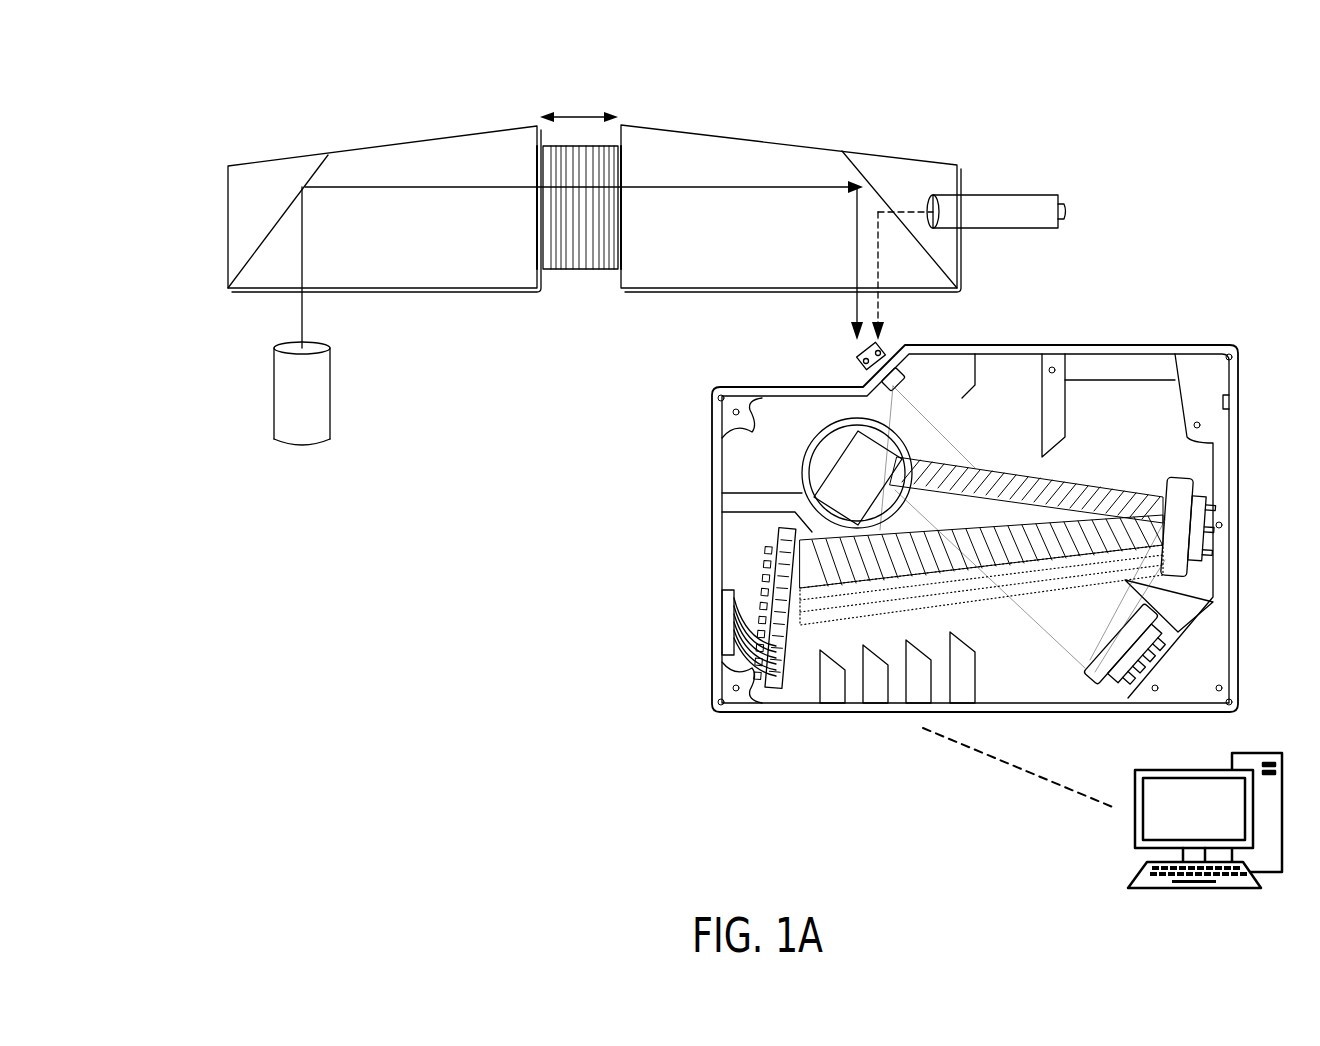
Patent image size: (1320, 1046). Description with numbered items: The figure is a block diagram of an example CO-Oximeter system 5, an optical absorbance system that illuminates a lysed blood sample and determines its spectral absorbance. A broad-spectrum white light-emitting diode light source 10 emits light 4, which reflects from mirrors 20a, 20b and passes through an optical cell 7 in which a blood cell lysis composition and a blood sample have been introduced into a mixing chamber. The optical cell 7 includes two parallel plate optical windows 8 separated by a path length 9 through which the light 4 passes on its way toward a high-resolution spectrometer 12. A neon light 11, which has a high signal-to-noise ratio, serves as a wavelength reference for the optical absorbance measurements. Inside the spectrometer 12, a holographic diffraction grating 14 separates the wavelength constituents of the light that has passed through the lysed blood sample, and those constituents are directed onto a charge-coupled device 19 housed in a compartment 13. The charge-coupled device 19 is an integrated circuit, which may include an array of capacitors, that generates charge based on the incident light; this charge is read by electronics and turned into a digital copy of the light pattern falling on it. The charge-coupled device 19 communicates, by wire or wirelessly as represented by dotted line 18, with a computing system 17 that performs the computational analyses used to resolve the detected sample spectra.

The CO-Oximeter system 5 is at (160, 118).
The light 4 is at (715, 187).
The mirror 20a is at (315, 172).
The mirror 20b is at (862, 184).
The path length 9 is at (578, 110).
The optical cell 7 is at (590, 248).
The parallel plate optical windows 8 is at (537, 244).
The neon light 11 is at (1000, 210).
The light-emitting diode (LED) light source 10 is at (302, 446).
The spectrometer 12 is at (1240, 348).
The holographic diffraction grating 14 is at (848, 447).
The compartment 13 is at (745, 540).
The charge-coupled device (CCD) 19 is at (770, 588).
The dotted line 18 is at (1040, 782).
The computing system 17 is at (1140, 873).